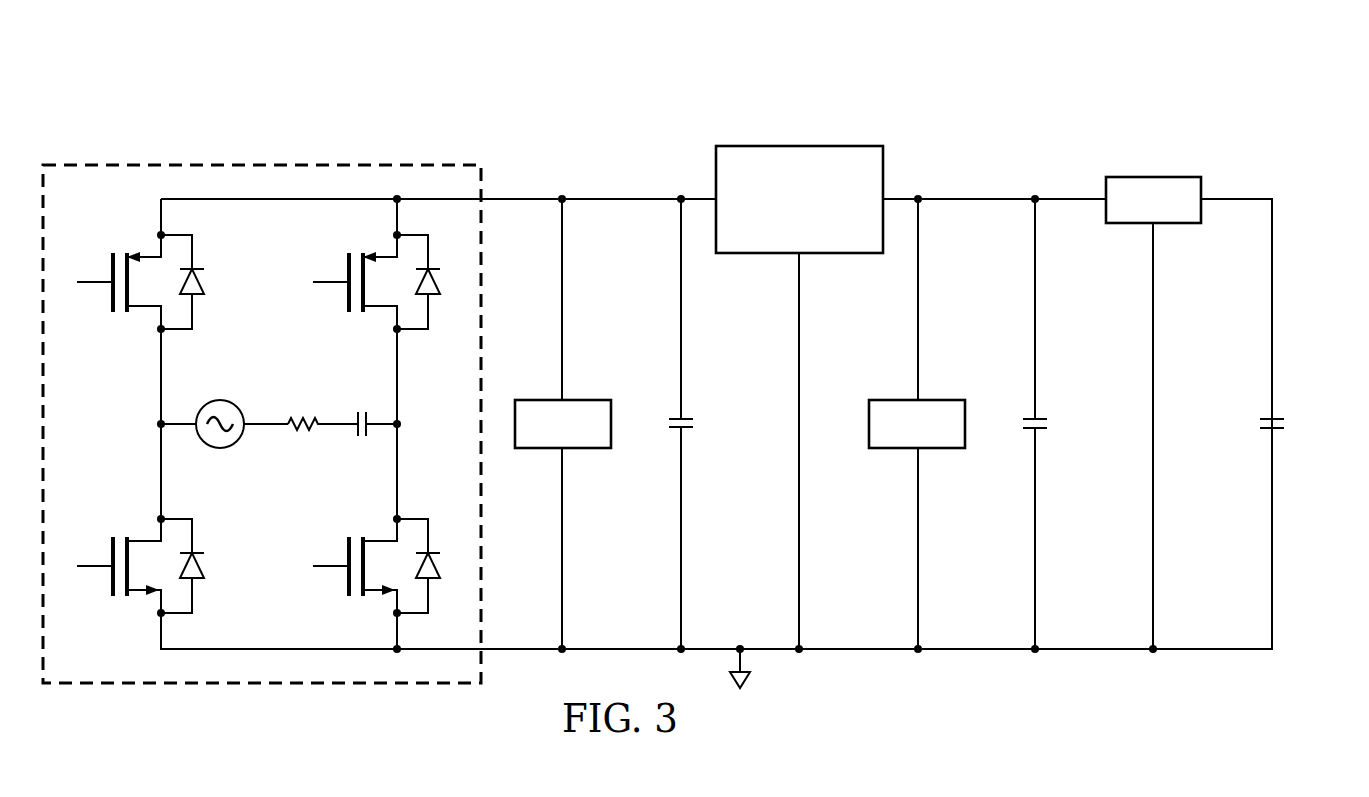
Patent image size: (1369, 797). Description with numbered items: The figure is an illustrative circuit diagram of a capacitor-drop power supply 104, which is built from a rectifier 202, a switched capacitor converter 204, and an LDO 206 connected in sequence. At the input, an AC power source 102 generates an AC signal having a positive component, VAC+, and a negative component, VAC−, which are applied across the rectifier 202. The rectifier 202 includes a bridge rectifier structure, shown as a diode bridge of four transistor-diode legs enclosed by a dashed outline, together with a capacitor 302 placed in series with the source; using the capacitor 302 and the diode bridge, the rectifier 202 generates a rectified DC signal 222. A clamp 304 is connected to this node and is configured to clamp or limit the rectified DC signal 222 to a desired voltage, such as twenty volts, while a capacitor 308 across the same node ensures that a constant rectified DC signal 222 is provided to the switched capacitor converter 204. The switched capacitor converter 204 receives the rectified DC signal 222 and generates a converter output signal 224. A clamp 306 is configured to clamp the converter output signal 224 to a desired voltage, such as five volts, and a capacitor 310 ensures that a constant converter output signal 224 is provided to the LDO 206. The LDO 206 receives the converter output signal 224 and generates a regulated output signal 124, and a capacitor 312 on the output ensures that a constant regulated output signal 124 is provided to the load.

The capacitor-drop power supply 104 is at (528, 91).
The rectifier 202 is at (220, 163).
The AC power source 102 is at (220, 400).
The capacitor 302 is at (358, 411).
The rectified DC signal 222 is at (676, 205).
The switched capacitor converter 204 is at (812, 146).
The clamp 304 is at (540, 400).
The capacitor 308 is at (694, 424).
The clamp 306 is at (940, 400).
The converter output signal 224 is at (1040, 205).
The capacitor 310 is at (1047, 423).
The LDO 206 is at (1165, 177).
The regulated output signal 124 is at (1229, 199).
The capacitor 312 is at (1285, 423).